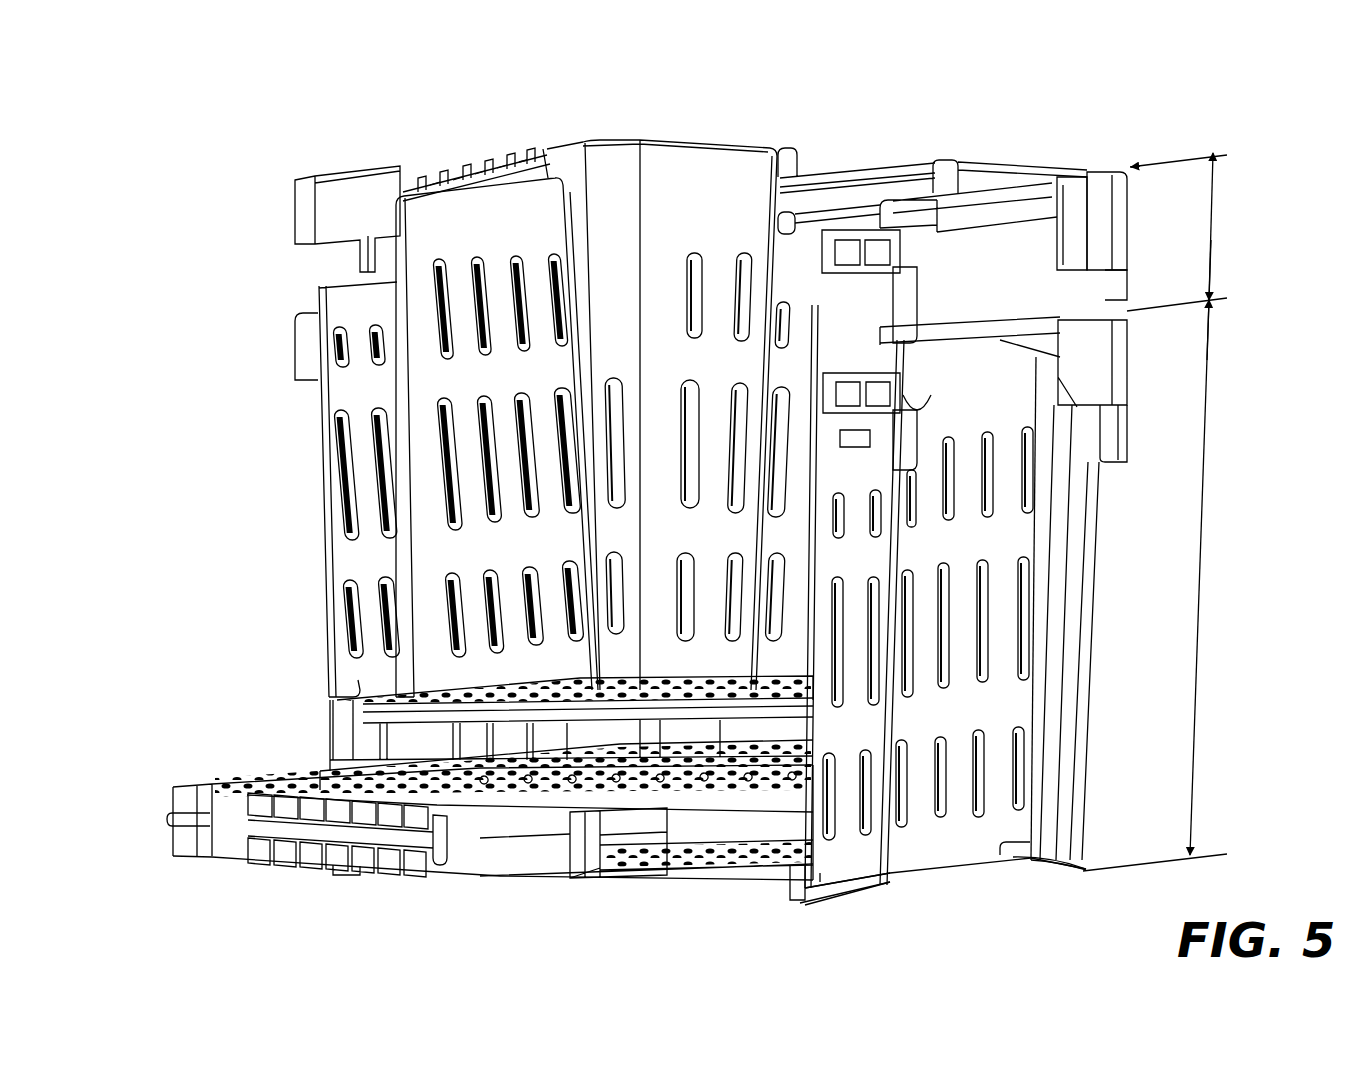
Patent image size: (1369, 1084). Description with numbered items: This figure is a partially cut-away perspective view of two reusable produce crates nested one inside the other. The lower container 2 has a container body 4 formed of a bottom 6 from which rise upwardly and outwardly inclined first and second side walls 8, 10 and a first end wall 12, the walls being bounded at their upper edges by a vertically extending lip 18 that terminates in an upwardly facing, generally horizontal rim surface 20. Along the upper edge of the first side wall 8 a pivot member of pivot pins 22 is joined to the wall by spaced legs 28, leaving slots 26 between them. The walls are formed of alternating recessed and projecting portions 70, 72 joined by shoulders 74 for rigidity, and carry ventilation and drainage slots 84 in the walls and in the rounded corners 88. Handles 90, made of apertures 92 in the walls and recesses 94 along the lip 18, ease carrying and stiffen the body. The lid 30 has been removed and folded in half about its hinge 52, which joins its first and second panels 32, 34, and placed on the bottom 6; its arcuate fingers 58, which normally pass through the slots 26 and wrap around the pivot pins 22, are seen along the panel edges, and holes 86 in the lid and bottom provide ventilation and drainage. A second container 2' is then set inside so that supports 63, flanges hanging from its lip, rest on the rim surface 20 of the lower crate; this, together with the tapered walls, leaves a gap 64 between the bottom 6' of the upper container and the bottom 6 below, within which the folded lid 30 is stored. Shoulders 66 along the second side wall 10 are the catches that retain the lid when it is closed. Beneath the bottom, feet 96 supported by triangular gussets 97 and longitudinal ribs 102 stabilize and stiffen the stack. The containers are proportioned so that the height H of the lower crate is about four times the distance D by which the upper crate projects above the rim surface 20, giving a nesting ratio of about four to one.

The container 2 is at (1109, 637).
The second container 2' is at (329, 194).
The container body 4 is at (1094, 585).
The bottom 6 is at (646, 886).
The bottom of upper container 6' is at (297, 734).
The first side wall 8 is at (318, 298).
The second side wall 10 is at (919, 618).
The first end wall 12 is at (840, 177).
The lip 18 is at (1111, 236).
The rim surface 20 is at (1036, 185).
The pivot pins 22 is at (492, 405).
The slots 26 is at (455, 186).
The legs 28 is at (516, 182).
The lid 30 is at (237, 868).
The first panel 32 is at (188, 855).
The second panel 34 is at (205, 782).
The hinge 52 is at (656, 856).
The fingers 58 is at (440, 871).
The supports 63 is at (1120, 300).
The gap 64 is at (371, 750).
The shoulders 66 is at (975, 210).
The recessed portions 70 is at (1019, 846).
The projecting portions 72 is at (866, 880).
The shoulders 74 is at (883, 873).
The slots 84 is at (933, 806).
The holes 86 is at (633, 690).
The corners 88 is at (620, 212).
The handles 90 is at (853, 480).
The apertures 92 is at (852, 448).
The recesses 94 is at (905, 408).
The feet 96 is at (833, 902).
The gussets 97 is at (796, 896).
The longitudinal ribs 102 is at (586, 725).
The distance D is at (1187, 232).
The height H is at (1162, 585).